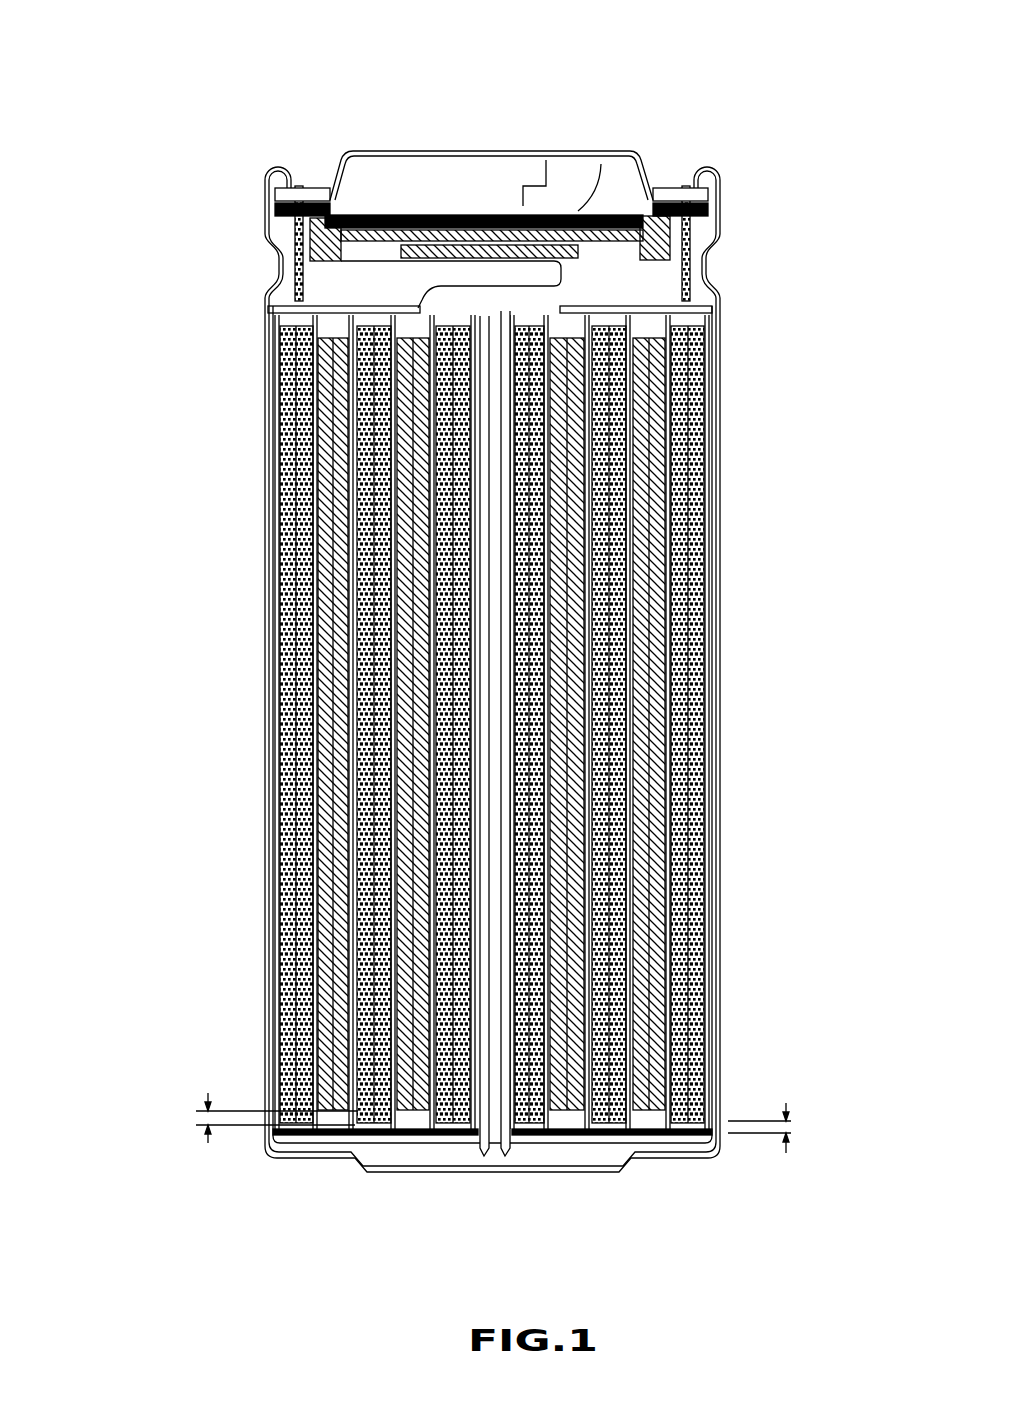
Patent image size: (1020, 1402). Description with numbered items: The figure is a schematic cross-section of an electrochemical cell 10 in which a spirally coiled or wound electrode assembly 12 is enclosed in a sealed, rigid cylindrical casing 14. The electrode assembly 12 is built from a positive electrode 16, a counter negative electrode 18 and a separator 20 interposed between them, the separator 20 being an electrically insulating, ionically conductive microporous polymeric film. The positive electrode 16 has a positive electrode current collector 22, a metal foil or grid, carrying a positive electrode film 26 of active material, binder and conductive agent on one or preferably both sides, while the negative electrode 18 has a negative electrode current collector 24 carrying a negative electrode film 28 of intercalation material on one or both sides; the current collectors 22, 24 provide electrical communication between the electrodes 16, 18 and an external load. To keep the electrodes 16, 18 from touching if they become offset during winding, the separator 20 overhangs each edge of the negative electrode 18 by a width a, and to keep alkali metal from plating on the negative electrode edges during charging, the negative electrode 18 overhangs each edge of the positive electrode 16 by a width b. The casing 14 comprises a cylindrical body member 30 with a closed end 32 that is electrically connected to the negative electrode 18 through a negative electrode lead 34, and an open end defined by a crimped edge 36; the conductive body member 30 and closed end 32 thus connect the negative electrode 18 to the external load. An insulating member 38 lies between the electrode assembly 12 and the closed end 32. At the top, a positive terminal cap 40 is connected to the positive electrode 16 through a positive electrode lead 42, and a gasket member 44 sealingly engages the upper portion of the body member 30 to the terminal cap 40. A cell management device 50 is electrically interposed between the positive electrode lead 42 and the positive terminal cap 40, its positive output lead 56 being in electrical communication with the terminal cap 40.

The electrochemical cell 10 is at (197, 127).
The electrode assembly 12 is at (710, 375).
The cylindrical casing 14 is at (722, 442).
The positive electrode 16 is at (805, 600).
The negative electrode 18 is at (805, 505).
The separator 20 is at (660, 735).
The positive electrode current collector 22 is at (647, 645).
The negative electrode current collector 24 is at (680, 548).
The positive electrode film 26 is at (655, 607).
The negative electrode film 28 is at (690, 512).
The cylindrical body member 30 is at (256, 922).
The closed end 32 is at (318, 1153).
The negative electrode lead 34 is at (290, 1121).
The crimped edge 36 is at (672, 178).
The insulating member 38 is at (698, 1130).
The positive terminal cap 40 is at (426, 142).
The positive electrode lead 42 is at (553, 266).
The gasket member 44 is at (690, 165).
The cell management device 50 is at (590, 153).
The positive output lead 56 is at (534, 152).
The separator overhang width a is at (772, 1128).
The negative electrode overhang width b is at (260, 1118).